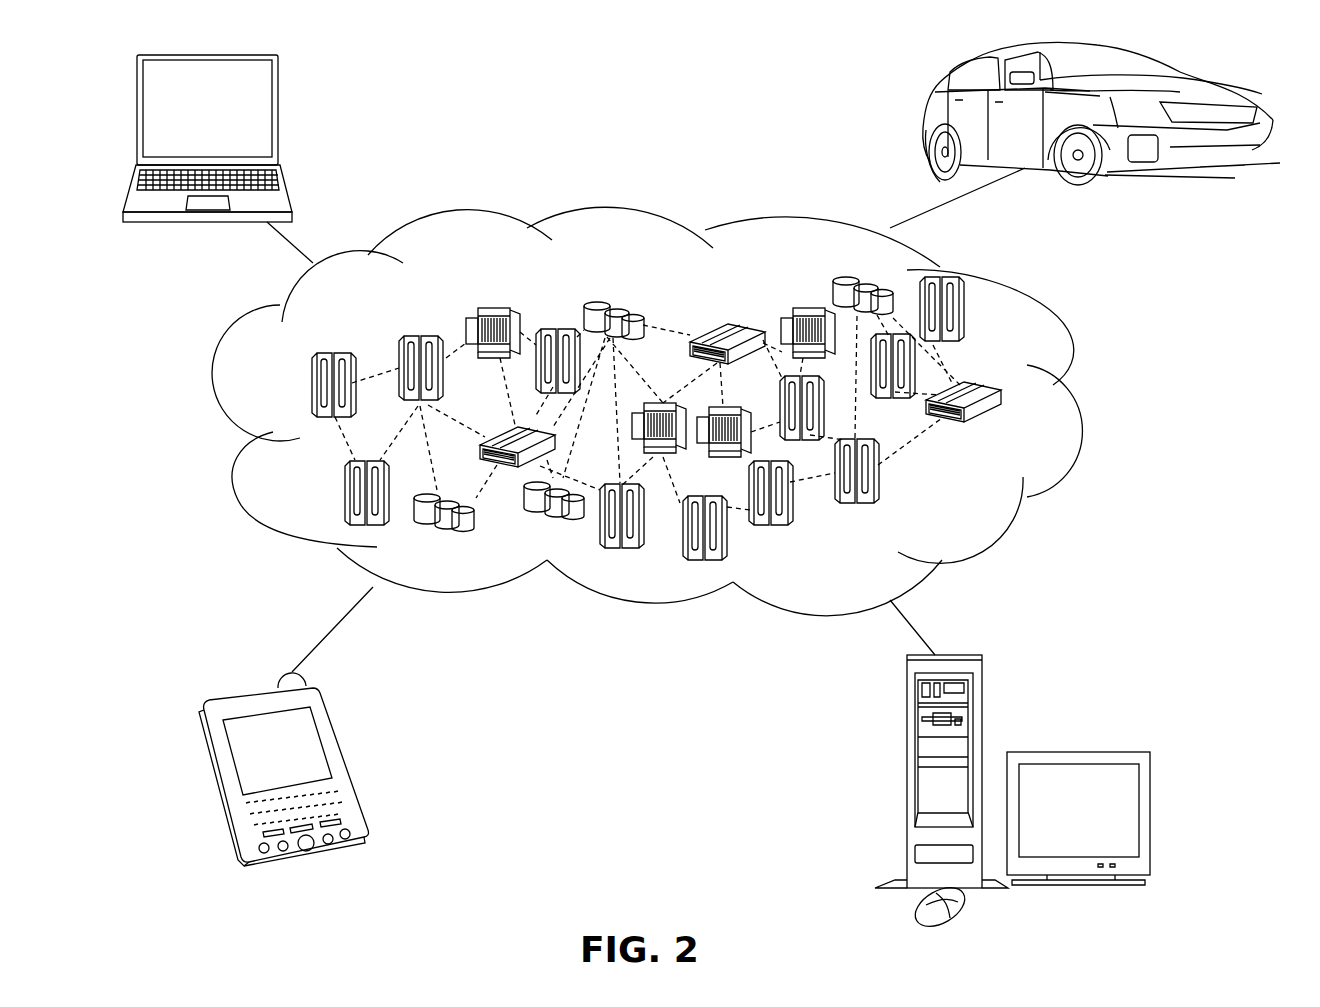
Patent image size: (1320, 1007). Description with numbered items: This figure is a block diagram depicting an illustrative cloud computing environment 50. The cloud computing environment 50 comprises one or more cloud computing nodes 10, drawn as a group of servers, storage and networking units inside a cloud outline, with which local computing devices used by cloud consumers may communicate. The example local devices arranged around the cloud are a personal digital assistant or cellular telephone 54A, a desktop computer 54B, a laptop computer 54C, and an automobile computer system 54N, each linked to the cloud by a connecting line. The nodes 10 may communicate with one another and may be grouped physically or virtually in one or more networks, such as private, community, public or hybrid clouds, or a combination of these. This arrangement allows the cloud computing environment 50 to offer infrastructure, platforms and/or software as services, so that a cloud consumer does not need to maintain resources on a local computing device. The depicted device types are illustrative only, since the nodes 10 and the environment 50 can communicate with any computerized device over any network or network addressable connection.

The cloud computing node 10 is at (980, 502).
The cloud computing environment 50 is at (1070, 398).
The personal digital assistant (PDA) or cellular telephone 54A is at (333, 730).
The desktop computer 54B is at (905, 715).
The laptop computer 54C is at (280, 93).
The automobile computer system 54N is at (918, 118).